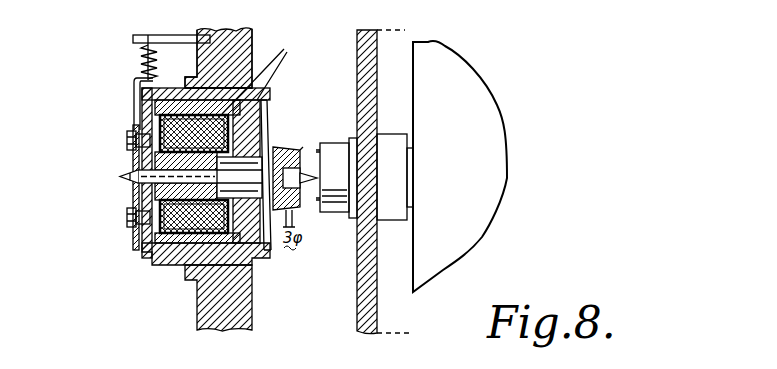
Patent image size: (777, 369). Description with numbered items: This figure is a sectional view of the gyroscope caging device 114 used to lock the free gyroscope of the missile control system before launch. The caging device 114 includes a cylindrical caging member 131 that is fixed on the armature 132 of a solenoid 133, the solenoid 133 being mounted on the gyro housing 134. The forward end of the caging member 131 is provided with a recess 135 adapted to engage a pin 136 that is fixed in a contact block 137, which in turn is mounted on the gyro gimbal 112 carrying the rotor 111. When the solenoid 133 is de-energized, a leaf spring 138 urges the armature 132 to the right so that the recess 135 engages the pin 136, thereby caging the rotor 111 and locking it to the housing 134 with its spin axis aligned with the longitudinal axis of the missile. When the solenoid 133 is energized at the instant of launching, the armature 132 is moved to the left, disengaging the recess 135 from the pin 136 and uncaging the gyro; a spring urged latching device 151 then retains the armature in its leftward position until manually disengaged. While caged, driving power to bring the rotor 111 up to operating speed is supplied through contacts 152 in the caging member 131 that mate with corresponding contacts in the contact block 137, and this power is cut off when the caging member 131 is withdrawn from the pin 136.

The rotor 111 is at (482, 74).
The gimbal 112 is at (357, 50).
The caging device 114 is at (65, 119).
The caging member 131 is at (292, 147).
The armature 132 is at (276, 146).
The solenoid 133 is at (144, 250).
The gyro housing 134 is at (197, 309).
The recess 135 is at (311, 175).
The pin 136 is at (306, 177).
The contact block 137 is at (342, 214).
The leaf spring 138 is at (291, 55).
The latching device 151 is at (128, 158).
The contacts 152 is at (310, 145).